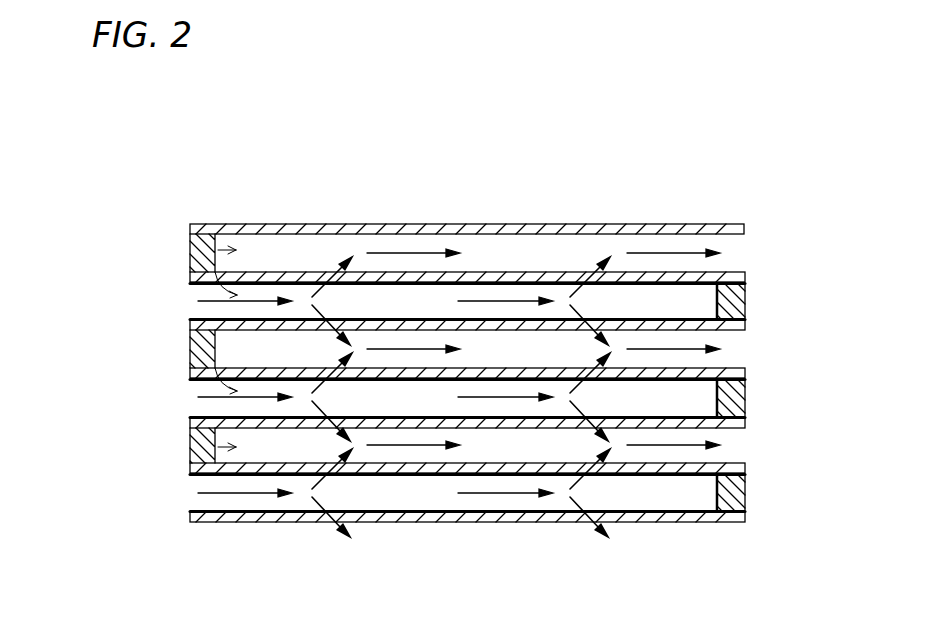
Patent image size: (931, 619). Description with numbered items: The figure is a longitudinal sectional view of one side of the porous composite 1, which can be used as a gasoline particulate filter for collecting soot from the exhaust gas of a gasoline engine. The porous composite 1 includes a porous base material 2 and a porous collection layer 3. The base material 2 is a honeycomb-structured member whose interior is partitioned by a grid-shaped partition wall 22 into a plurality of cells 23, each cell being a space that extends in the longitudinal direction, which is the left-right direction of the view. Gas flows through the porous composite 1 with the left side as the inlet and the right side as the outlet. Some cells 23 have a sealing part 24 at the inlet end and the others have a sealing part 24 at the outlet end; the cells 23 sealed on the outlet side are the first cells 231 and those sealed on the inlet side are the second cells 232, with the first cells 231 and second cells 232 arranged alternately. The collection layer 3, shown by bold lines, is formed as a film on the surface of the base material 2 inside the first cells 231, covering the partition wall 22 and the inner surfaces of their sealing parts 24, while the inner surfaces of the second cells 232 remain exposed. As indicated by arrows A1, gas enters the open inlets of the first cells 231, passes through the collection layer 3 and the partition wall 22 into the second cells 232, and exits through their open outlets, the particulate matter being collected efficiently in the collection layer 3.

The porous composite 1 is at (173, 163).
The base material 2 is at (611, 166).
The partition wall 22 is at (525, 227).
The cells 23 is at (111, 382).
The first cells 231 is at (192, 274).
The second cells 232 is at (192, 233).
The sealing part 24 is at (200, 355).
The collection layer 3 is at (202, 318).
The arrows A1 is at (332, 277).